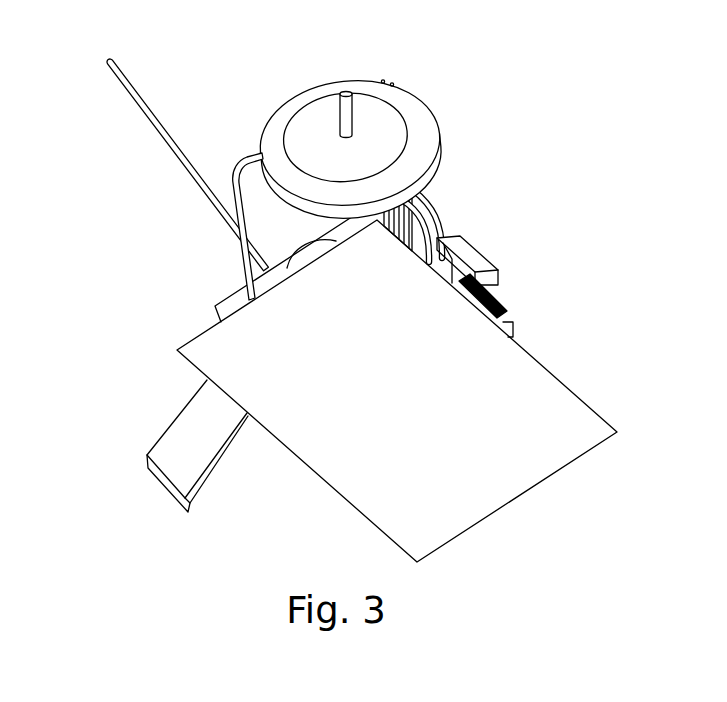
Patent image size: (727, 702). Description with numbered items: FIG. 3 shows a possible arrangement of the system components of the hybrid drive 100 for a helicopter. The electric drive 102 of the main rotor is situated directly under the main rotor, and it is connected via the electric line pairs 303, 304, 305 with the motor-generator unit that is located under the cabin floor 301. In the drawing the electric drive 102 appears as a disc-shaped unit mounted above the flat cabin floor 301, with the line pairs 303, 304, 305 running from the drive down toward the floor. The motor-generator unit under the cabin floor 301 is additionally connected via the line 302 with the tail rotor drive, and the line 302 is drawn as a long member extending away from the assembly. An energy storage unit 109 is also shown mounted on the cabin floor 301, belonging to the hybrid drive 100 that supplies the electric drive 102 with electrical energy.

The hybrid drive 100 is at (350, 282).
The electric drive 102 is at (420, 138).
The energy storage unit 109 is at (497, 298).
The cabin floor 301 is at (547, 453).
The line 302 is at (117, 83).
The line pair 303 is at (243, 162).
The line pair 304 is at (384, 80).
The line pair 305 is at (433, 223).